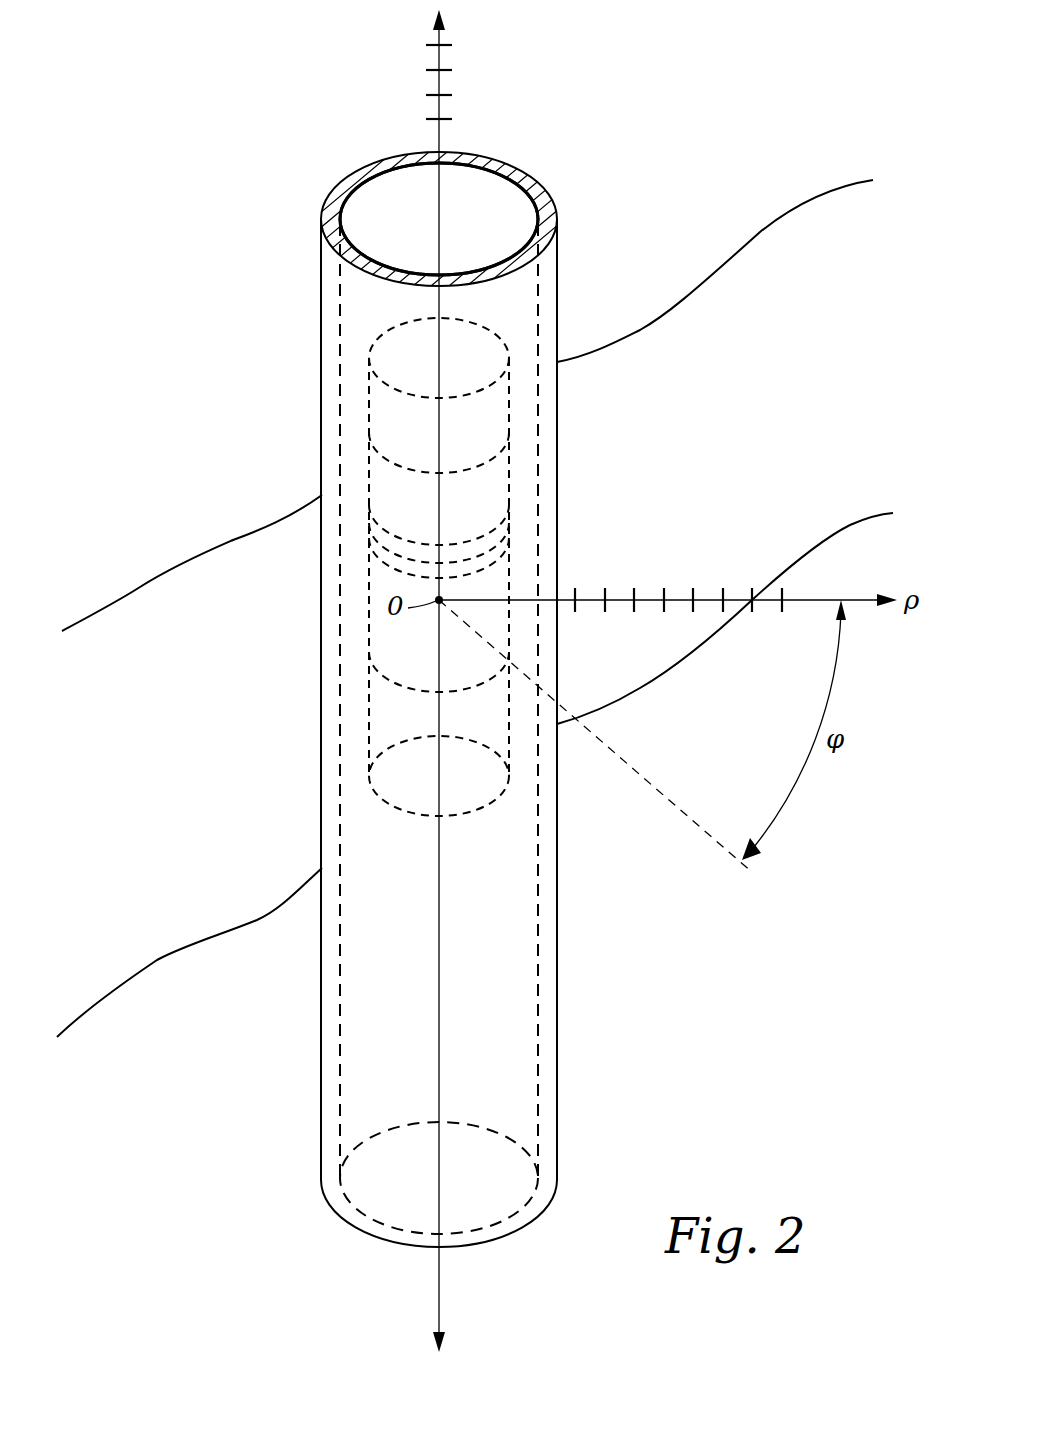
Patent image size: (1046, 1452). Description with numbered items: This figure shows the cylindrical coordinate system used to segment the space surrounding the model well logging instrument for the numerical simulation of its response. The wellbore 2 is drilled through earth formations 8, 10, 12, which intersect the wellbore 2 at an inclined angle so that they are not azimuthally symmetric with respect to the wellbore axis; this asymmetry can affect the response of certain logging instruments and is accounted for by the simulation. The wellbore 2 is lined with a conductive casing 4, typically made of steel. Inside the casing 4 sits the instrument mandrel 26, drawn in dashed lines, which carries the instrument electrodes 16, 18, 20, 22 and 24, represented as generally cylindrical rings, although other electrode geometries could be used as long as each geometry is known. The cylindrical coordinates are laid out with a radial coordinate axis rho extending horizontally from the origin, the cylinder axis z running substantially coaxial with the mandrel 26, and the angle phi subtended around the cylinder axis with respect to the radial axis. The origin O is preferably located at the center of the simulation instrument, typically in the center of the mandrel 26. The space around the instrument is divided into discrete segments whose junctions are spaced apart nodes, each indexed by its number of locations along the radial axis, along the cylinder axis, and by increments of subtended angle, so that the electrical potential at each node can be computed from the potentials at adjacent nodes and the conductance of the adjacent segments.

The wellbore 2 is at (382, 188).
The conductive casing 4 is at (507, 173).
The earth formation 8 is at (181, 477).
The earth formation 10 is at (196, 762).
The earth formation 12 is at (198, 1074).
The instrument electrode 16 is at (490, 462).
The instrument electrode 18 is at (500, 522).
The instrument electrode 20 is at (500, 543).
The instrument electrode 22 is at (383, 577).
The instrument electrode 24 is at (388, 680).
The instrument mandrel 26 is at (486, 325).